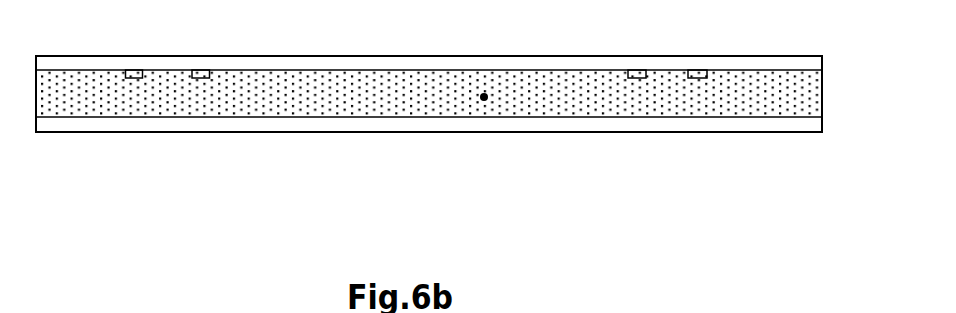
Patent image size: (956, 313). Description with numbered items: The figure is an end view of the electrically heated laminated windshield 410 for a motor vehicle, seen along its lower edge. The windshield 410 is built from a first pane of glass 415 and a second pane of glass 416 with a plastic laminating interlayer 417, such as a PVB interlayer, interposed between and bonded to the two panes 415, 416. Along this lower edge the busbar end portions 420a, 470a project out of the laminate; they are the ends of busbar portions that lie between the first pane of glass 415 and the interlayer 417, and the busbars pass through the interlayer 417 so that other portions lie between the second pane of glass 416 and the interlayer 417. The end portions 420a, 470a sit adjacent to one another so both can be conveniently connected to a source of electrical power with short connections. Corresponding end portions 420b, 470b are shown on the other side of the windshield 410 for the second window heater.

The heated windshield 410 is at (324, 140).
The first pane of glass 415 is at (398, 56).
The second pane of glass 416 is at (228, 132).
The plastic laminating interlayer 417 is at (417, 150).
The end portion of first busbar 420a is at (231, 39).
The second electrode element 420b is at (637, 70).
The end portion of second busbar 470a is at (132, 70).
The second contact element 470b is at (697, 70).